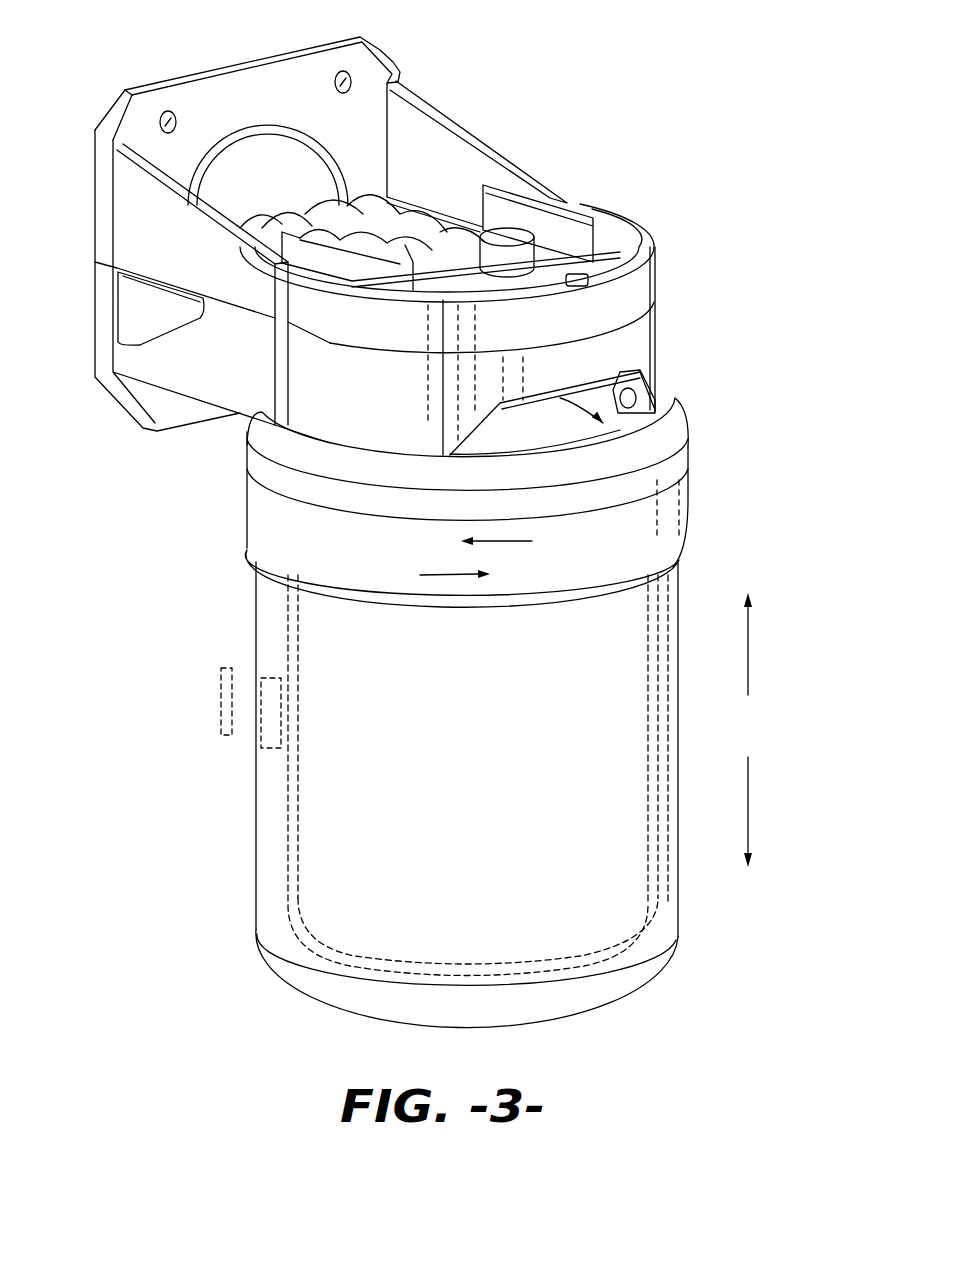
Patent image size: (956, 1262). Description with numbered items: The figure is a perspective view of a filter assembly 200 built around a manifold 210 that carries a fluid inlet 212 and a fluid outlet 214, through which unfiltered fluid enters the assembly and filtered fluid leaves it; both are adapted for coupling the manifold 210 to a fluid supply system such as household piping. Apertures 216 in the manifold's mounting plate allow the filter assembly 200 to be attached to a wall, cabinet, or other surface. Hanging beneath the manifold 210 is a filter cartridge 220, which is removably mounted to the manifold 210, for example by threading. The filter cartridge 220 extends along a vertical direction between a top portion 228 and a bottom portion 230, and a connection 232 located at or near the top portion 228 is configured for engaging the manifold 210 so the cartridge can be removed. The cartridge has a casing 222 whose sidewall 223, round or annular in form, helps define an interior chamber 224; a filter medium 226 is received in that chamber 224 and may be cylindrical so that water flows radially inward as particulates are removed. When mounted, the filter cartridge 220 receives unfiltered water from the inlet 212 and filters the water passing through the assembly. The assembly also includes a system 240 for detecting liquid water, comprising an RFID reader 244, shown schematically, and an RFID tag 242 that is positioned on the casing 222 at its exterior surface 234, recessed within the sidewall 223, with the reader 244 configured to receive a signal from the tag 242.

The filter assembly 200 is at (523, 92).
The manifold 210 is at (628, 302).
The fluid inlet 212 is at (310, 217).
The fluid outlet 214 is at (247, 221).
The apertures 216 is at (172, 118).
The filter cartridge 220 is at (257, 522).
The casing 222 is at (255, 857).
The sidewall 223 is at (687, 573).
The chamber 224 is at (662, 940).
The filter medium 226 is at (293, 810).
The top portion 228 is at (663, 393).
The bottom portion 230 is at (642, 984).
The connection 232 is at (628, 435).
The exterior surface 234 is at (253, 890).
The system for detecting liquid water 240 is at (165, 688).
The RFID tag 242 is at (260, 737).
The RFID reader 244 is at (220, 677).